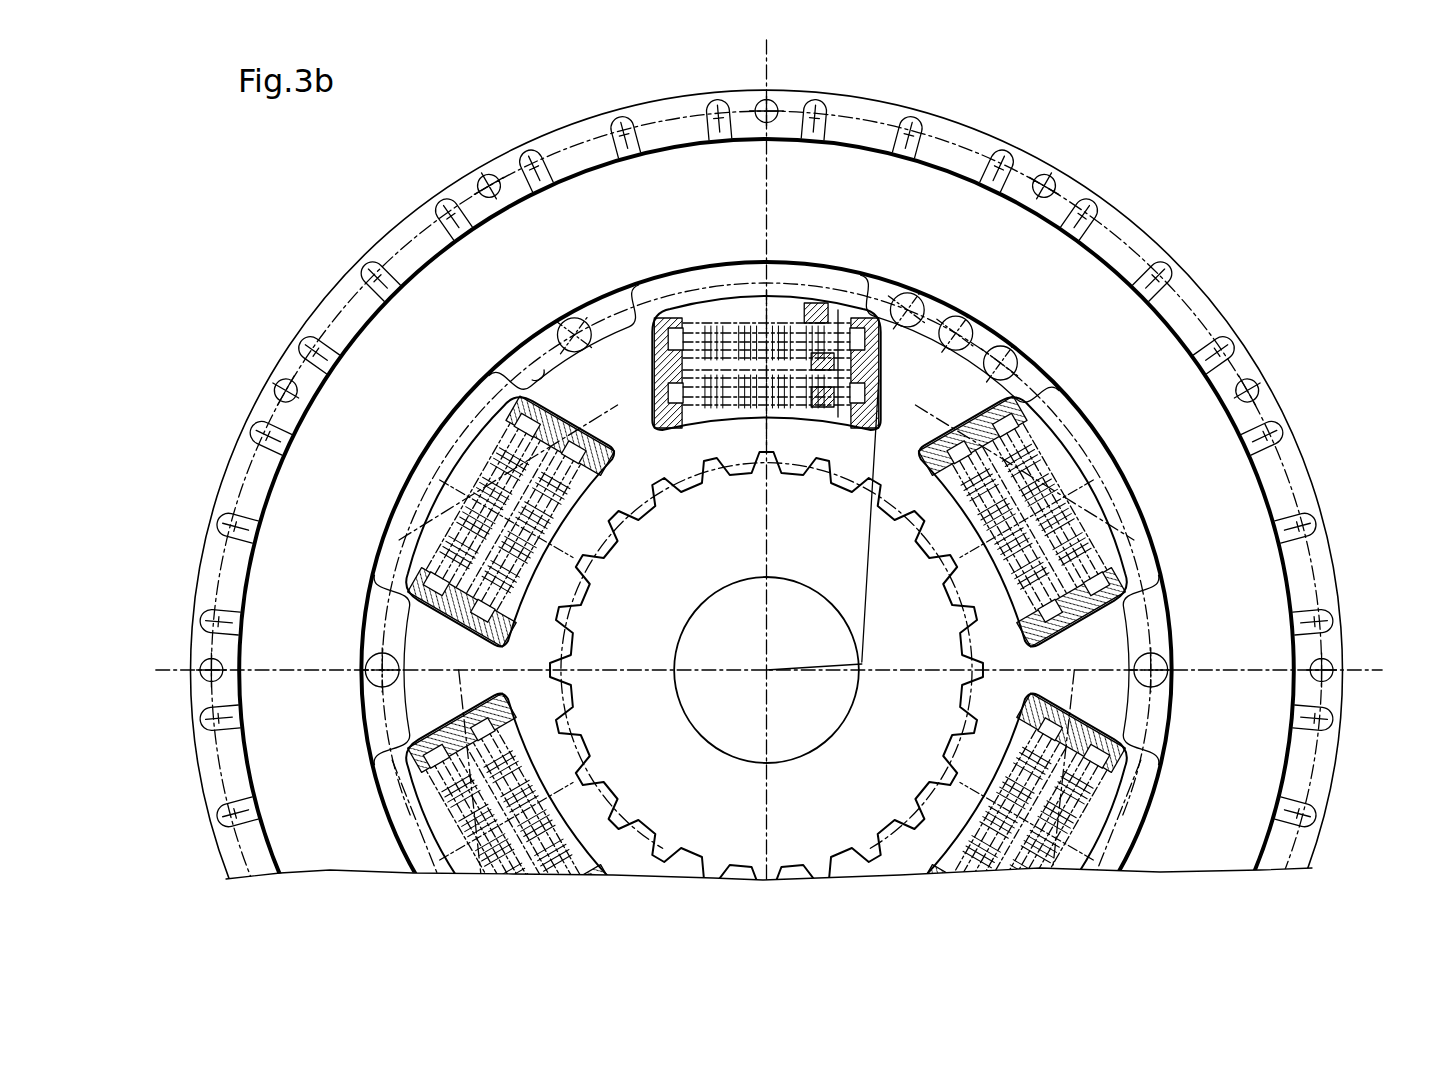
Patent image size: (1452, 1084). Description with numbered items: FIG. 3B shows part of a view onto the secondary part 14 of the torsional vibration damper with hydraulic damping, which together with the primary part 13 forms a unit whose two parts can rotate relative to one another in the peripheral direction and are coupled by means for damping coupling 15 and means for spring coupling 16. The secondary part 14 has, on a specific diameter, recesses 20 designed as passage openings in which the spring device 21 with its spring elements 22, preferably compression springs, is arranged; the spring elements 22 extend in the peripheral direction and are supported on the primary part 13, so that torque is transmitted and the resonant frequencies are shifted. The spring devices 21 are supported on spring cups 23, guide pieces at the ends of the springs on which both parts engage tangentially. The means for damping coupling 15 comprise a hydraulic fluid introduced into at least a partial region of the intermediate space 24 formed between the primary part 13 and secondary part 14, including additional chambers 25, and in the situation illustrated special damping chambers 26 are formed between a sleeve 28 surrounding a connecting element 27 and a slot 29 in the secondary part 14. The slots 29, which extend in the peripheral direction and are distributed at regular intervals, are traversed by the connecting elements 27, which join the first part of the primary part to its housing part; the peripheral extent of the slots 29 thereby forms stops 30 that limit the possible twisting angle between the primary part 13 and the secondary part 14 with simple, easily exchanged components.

The primary part 13 is at (385, 386).
The secondary part 14 is at (483, 400).
The means for damping coupling 15 is at (1176, 638).
The means for spring coupling 16 is at (1148, 518).
The recesses 20 is at (756, 300).
The spring device 21 is at (1148, 518).
The spring element 22 is at (1087, 555).
The spring cups 23 is at (878, 380).
The intermediate space 24 is at (607, 307).
The chambers 25 is at (523, 337).
The damping chamber 26 is at (563, 318).
The connecting elements 27 is at (953, 316).
The sleeve 28 is at (561, 322).
The slots 29 is at (998, 347).
The stops 30 is at (512, 375).